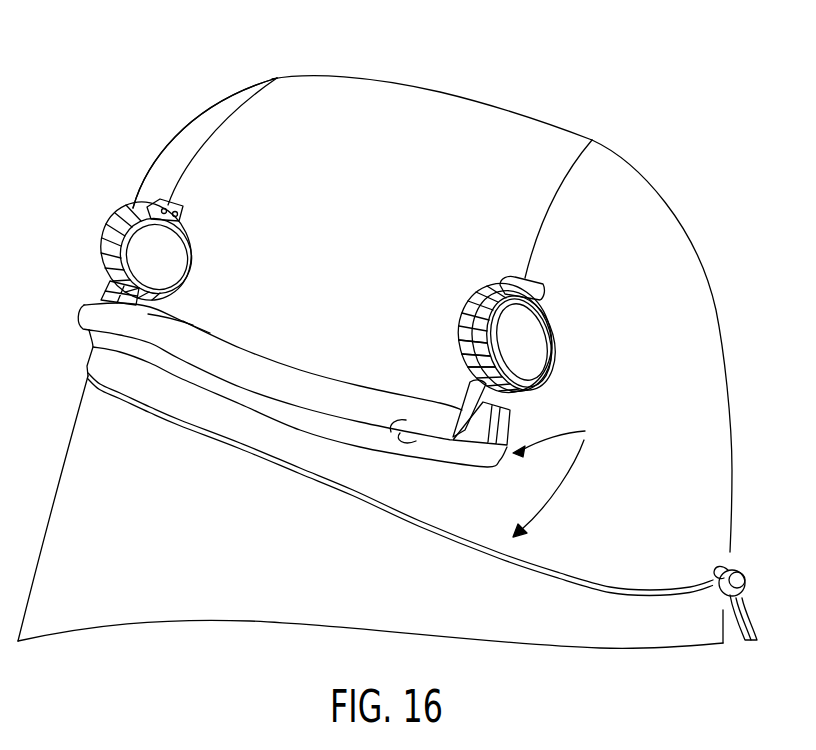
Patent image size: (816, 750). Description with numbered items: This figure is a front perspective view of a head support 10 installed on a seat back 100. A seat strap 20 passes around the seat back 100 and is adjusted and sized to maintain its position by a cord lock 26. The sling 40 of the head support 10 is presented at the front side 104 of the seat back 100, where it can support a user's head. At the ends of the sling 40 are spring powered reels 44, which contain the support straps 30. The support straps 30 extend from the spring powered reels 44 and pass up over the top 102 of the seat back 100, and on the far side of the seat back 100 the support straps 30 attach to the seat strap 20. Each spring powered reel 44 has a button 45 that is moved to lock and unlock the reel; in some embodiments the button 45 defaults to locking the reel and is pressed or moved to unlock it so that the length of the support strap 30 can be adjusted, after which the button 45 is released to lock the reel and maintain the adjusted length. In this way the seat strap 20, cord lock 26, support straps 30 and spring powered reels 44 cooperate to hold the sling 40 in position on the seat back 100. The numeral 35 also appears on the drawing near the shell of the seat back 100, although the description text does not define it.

The head support 10 is at (559, 477).
The seat strap 20 is at (567, 568).
The cord lock 26 is at (738, 573).
The support strap 30 is at (203, 147).
The helmet shell 35 is at (479, 129).
The sling 40 is at (294, 371).
The spring powered reel 44 is at (121, 230).
The button 45 is at (470, 350).
The seat back 100 is at (722, 357).
The top of seat back 102 is at (400, 80).
The front side of seat back 104 is at (307, 577).